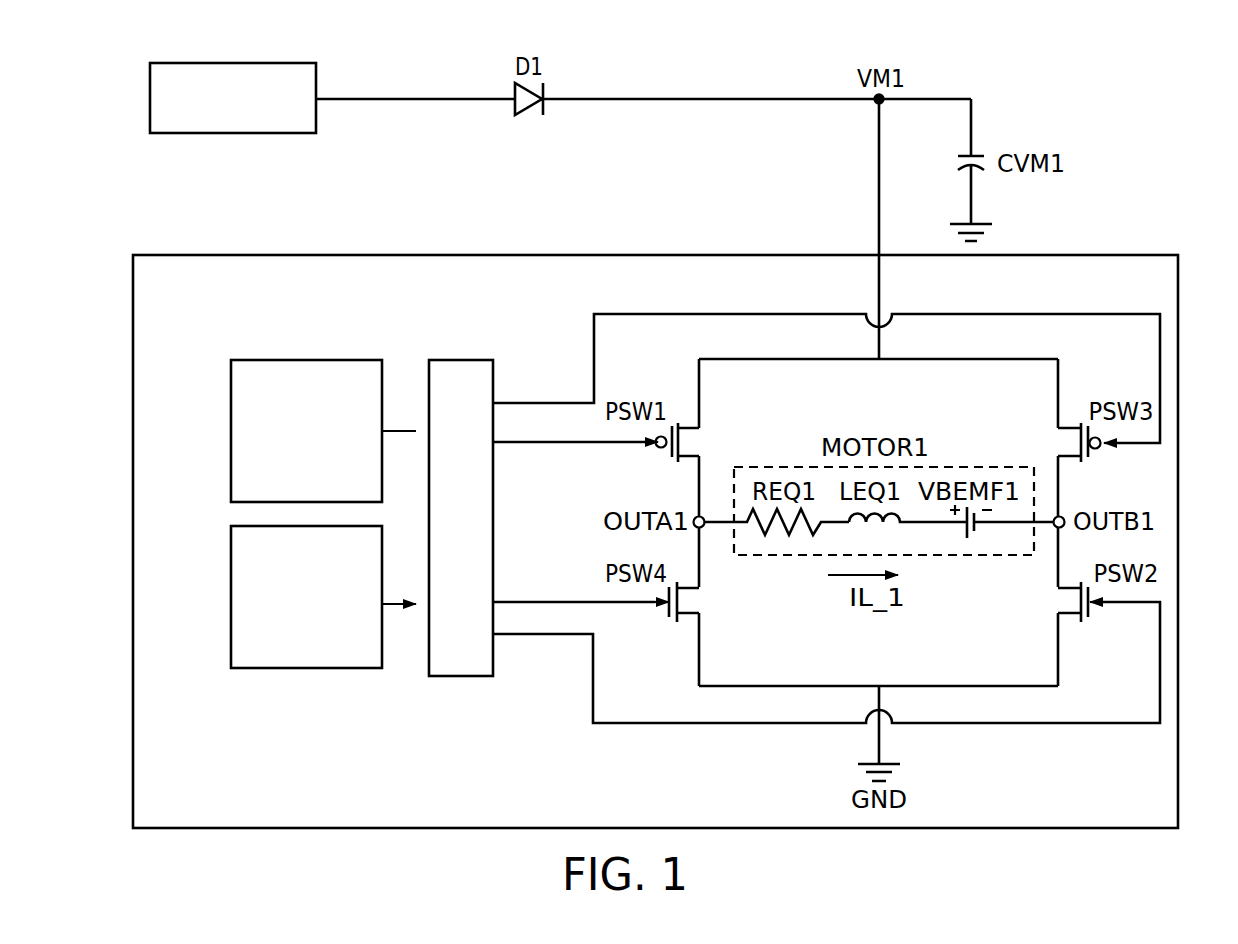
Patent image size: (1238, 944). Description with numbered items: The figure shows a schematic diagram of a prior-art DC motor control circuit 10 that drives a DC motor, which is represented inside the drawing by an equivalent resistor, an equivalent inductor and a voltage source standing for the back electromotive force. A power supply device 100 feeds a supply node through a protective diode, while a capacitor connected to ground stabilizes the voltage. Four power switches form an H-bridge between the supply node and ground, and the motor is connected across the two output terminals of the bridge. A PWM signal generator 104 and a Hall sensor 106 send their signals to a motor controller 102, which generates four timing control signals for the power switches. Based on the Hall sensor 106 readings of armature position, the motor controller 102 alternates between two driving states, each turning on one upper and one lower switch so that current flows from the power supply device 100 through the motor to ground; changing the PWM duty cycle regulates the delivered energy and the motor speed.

The DC motor control circuit 10 is at (1066, 97).
The power supply device 100 is at (182, 63).
The motor controller 102 is at (445, 360).
The PWM signal generator 104 is at (231, 380).
The Hall sensor 106 is at (231, 546).